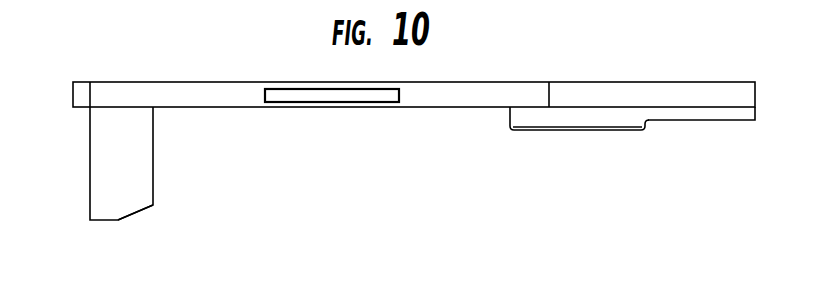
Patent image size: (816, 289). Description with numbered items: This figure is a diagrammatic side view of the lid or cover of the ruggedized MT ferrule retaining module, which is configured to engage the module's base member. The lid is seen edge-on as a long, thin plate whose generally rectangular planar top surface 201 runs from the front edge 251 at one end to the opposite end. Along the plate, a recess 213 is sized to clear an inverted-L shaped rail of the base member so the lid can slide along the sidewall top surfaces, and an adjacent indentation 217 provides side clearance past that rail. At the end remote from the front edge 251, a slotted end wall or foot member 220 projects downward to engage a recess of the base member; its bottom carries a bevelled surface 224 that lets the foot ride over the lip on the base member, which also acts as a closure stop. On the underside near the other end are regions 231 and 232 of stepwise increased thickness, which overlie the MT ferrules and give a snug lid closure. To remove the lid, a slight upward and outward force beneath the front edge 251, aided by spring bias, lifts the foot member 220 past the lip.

The planar top surface 201 is at (172, 82).
The front edge 251 is at (72, 102).
The recess 213 is at (455, 95).
The indentation 217 is at (333, 94).
The slotted end wall member 220 is at (107, 182).
The bevelled surface 224 is at (137, 213).
The region of stepwise increased thickness 231 is at (583, 120).
The region of stepwise increased thickness 232 is at (700, 113).